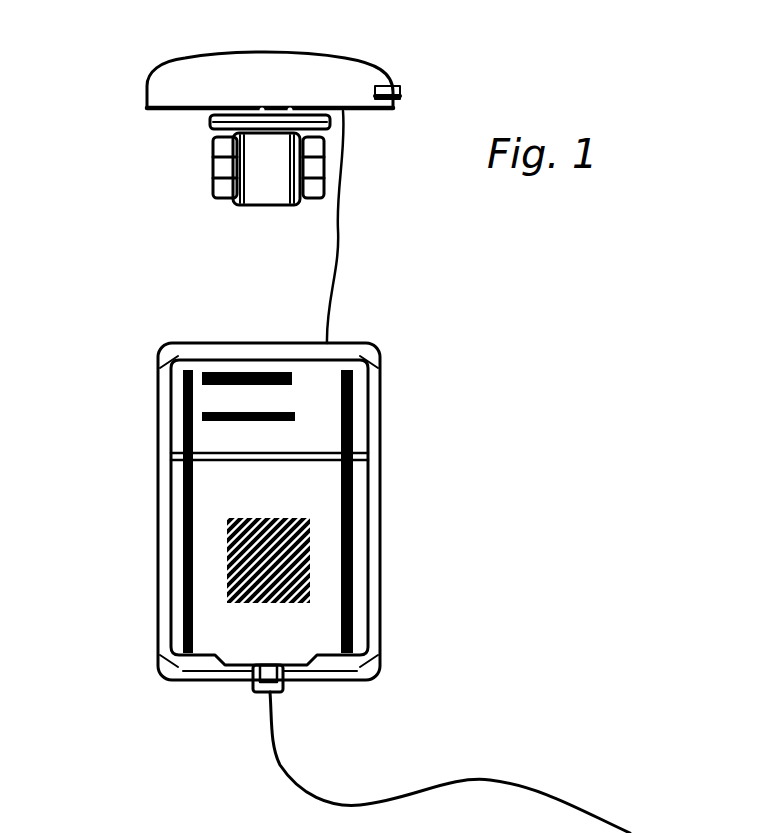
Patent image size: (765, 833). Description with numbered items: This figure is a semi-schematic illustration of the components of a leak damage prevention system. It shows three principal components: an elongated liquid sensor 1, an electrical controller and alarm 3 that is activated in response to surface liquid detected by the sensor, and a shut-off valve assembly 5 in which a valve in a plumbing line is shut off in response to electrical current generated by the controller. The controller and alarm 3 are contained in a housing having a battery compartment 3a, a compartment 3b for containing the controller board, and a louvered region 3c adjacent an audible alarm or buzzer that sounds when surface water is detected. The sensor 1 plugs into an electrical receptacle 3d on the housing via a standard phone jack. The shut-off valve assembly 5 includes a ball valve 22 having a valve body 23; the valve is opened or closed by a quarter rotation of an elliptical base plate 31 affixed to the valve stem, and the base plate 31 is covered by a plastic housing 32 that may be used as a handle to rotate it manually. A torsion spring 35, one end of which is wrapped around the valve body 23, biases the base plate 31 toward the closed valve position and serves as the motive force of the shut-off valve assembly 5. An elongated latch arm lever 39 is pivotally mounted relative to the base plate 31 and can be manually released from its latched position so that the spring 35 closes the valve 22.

The elongated liquid sensor 1 is at (548, 768).
The electrical controller and alarm 3 is at (96, 487).
The battery compartment 3a is at (321, 418).
The compartment for containing the controller board 3b is at (327, 613).
The louvered region 3c is at (272, 565).
The electrical receptacle 3d is at (283, 690).
The shut-off valve assembly 5 is at (267, 40).
The ball valve 22 is at (217, 219).
The valve body 23 is at (221, 192).
The base plate 31 is at (393, 104).
The plastic housing 32 is at (340, 74).
The torsion spring 35 is at (215, 122).
The latch arm lever 39 is at (402, 92).